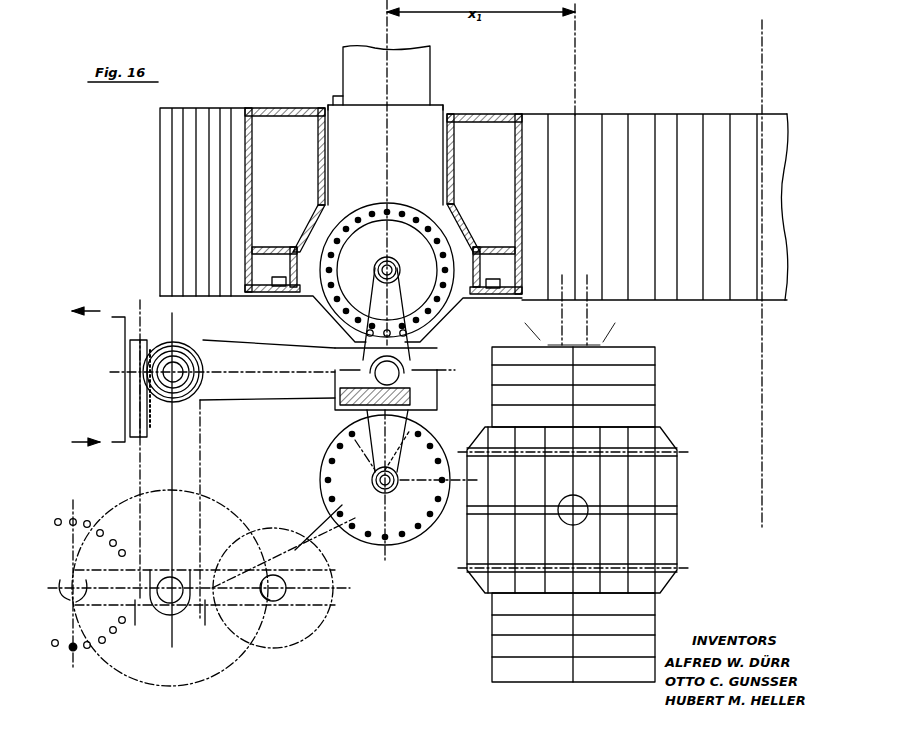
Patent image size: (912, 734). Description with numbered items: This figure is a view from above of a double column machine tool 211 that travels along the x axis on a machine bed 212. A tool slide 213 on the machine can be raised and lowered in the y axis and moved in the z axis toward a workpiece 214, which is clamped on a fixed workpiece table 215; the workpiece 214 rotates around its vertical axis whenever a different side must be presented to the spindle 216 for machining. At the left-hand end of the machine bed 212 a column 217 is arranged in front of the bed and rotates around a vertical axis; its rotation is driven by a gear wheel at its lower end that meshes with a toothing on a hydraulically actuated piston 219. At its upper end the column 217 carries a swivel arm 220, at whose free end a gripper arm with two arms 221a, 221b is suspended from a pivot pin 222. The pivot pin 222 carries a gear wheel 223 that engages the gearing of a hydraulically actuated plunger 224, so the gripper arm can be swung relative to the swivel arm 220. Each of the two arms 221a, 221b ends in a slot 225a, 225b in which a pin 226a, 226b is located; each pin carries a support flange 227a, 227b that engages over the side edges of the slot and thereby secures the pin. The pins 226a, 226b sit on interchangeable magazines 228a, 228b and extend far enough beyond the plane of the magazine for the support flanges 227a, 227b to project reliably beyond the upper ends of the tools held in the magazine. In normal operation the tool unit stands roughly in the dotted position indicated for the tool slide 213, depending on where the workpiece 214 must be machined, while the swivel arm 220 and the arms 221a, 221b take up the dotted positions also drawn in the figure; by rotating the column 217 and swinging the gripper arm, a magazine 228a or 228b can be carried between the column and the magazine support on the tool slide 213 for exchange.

The machine tool 211 is at (485, 132).
The machine bed 212 is at (705, 132).
The tool slide 213 is at (413, 117).
The workpiece 214 is at (662, 504).
The workpiece table 215 is at (640, 379).
The spindle 216 is at (430, 343).
The column 217 is at (175, 368).
The hydraulically actuated piston 219 is at (132, 360).
The swivel arm 220 is at (235, 386).
The arm 221a is at (395, 304).
The arm 221b is at (393, 438).
The pivot pin 222 is at (435, 352).
The gear wheel 223 is at (333, 364).
The hydraulically actuated plunger 224 is at (340, 412).
The slot 225a is at (381, 264).
The pin 226a is at (390, 262).
The support flange 227a is at (394, 272).
The interchangeable magazine 228a is at (392, 238).
The slot 225b is at (372, 497).
The pin 226b is at (372, 475).
The support flange 227b is at (375, 481).
The interchangeable magazine 228b is at (400, 526).